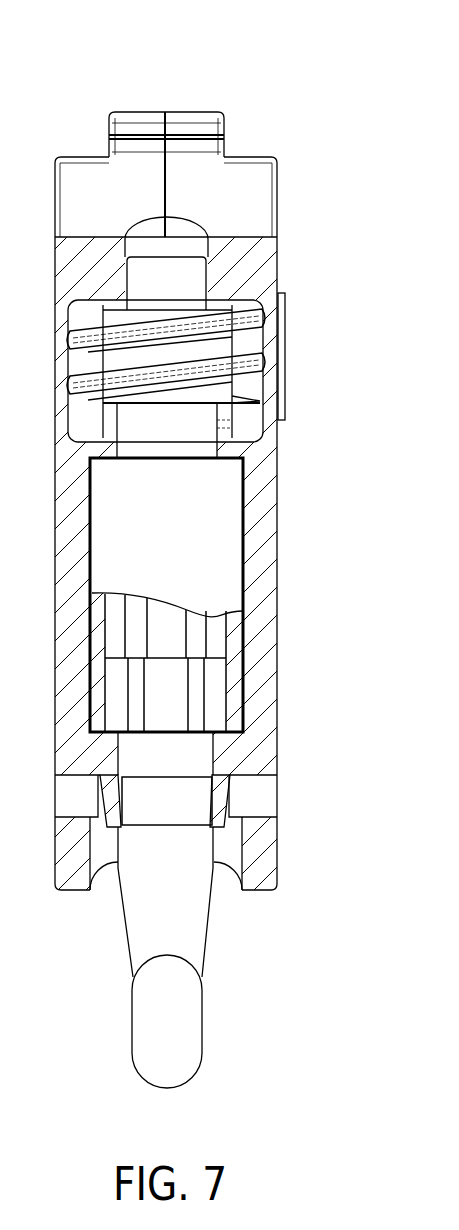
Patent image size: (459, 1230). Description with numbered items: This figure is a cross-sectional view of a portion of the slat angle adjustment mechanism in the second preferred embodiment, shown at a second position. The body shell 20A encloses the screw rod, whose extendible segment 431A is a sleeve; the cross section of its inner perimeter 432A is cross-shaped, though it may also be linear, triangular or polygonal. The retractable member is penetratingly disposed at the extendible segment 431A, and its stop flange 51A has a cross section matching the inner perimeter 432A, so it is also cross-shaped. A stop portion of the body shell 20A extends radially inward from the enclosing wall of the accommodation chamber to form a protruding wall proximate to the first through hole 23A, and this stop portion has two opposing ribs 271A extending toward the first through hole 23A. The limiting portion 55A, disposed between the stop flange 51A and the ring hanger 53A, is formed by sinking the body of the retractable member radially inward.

The body shell 20A is at (192, 111).
The extendible segment 431A is at (210, 503).
The inner perimeter 432A is at (198, 630).
The stop flange 51A is at (217, 687).
The ring hanger 53A is at (202, 1023).
The limiting portion 55A is at (198, 796).
The ribs 271A is at (220, 823).
The first through hole 23A is at (106, 876).